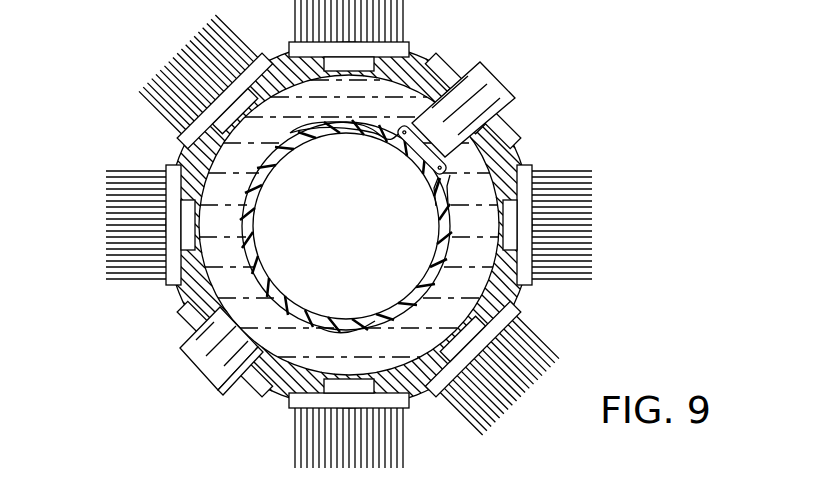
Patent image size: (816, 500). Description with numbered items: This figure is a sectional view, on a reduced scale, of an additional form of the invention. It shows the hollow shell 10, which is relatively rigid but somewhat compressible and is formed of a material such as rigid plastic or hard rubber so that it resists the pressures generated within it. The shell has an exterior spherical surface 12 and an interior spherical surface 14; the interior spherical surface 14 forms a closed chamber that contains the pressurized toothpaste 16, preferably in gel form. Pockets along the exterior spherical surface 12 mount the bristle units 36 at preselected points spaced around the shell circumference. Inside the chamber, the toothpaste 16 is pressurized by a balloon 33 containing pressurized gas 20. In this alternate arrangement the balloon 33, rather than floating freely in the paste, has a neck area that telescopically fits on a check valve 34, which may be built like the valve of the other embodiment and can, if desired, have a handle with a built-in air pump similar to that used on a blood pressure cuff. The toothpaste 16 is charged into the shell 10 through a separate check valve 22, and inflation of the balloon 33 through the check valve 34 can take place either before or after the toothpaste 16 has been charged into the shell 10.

The hollow shell 10 is at (273, 47).
The exterior spherical surface 12 is at (508, 127).
The interior spherical surface 14 is at (281, 364).
The toothpaste 16 is at (395, 362).
The pressurized gas 20 is at (347, 220).
The check valve 22 is at (205, 358).
The balloon 33 is at (268, 288).
The check valve 34 is at (475, 72).
The bristle units 36 is at (138, 163).